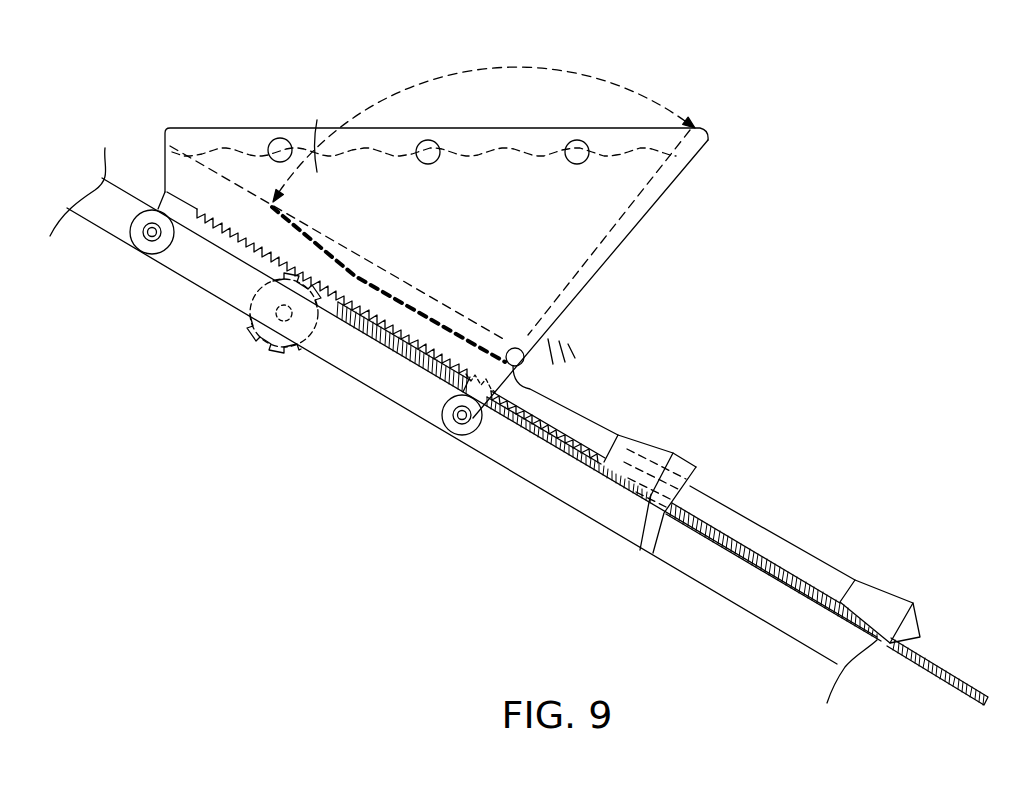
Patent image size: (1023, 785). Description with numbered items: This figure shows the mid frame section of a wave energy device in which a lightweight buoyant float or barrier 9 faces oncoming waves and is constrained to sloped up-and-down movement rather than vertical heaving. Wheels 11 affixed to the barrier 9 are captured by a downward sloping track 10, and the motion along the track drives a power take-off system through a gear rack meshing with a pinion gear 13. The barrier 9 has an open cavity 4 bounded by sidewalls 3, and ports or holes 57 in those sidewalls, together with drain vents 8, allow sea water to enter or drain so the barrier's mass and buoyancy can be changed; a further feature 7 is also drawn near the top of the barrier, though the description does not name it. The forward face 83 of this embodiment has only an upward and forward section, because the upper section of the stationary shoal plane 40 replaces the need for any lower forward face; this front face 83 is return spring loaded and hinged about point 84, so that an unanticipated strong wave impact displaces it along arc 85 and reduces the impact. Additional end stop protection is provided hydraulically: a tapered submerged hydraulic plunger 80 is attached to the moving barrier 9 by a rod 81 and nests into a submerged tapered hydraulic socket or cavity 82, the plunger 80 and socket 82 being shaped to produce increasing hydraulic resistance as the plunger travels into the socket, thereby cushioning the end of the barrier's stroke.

The sidewalls 3 is at (222, 127).
The open vessel interior volume 4 is at (318, 134).
The seal line 7 is at (257, 147).
The drain vents 8 is at (541, 328).
The buoyant float or barrier 9 is at (252, 224).
The track 10 is at (402, 411).
The wheels 11 is at (149, 250).
The pinion gear 13 is at (268, 338).
The stationary shoal plane 40 is at (952, 674).
The ports or holes 57 is at (281, 145).
The tapered submerged hydraulic plunger 80 is at (885, 590).
The rod 81 is at (771, 533).
The submerged tapered hydraulic socket or cavity 82 is at (650, 457).
The forward face 83 is at (664, 196).
The hinge point 84 is at (524, 367).
The arc 85 is at (414, 84).